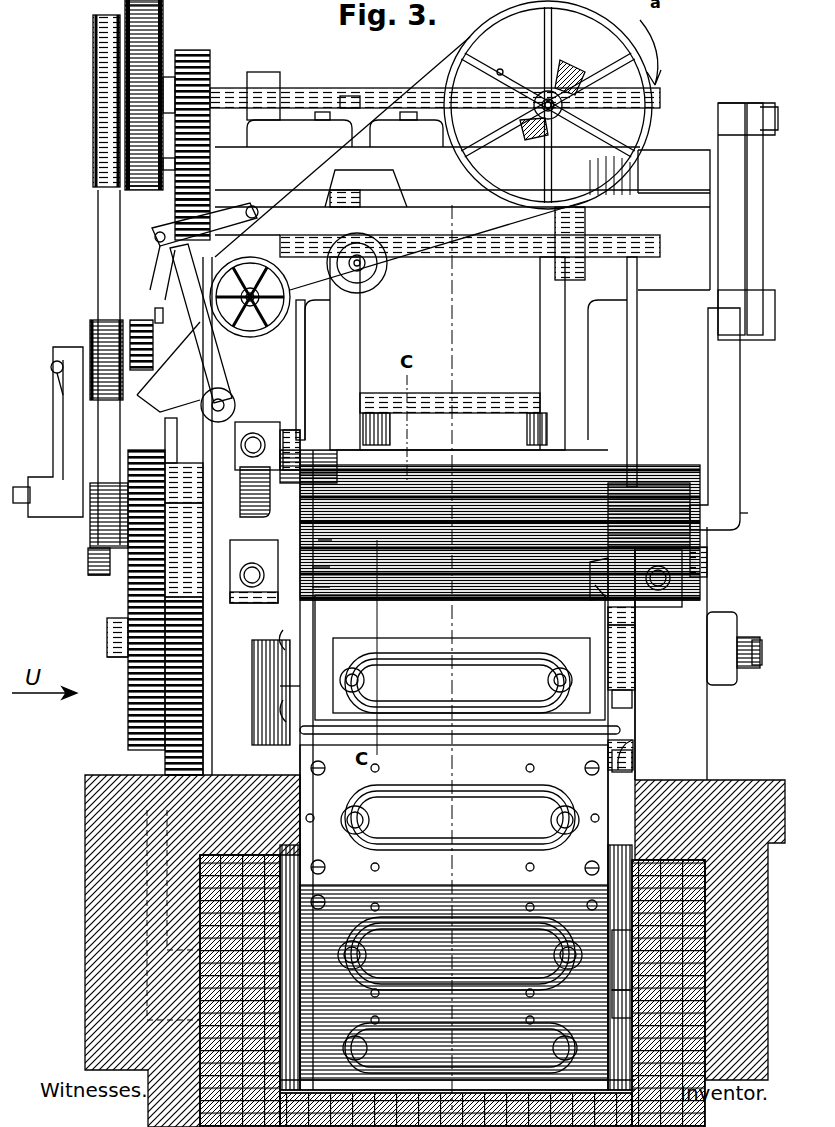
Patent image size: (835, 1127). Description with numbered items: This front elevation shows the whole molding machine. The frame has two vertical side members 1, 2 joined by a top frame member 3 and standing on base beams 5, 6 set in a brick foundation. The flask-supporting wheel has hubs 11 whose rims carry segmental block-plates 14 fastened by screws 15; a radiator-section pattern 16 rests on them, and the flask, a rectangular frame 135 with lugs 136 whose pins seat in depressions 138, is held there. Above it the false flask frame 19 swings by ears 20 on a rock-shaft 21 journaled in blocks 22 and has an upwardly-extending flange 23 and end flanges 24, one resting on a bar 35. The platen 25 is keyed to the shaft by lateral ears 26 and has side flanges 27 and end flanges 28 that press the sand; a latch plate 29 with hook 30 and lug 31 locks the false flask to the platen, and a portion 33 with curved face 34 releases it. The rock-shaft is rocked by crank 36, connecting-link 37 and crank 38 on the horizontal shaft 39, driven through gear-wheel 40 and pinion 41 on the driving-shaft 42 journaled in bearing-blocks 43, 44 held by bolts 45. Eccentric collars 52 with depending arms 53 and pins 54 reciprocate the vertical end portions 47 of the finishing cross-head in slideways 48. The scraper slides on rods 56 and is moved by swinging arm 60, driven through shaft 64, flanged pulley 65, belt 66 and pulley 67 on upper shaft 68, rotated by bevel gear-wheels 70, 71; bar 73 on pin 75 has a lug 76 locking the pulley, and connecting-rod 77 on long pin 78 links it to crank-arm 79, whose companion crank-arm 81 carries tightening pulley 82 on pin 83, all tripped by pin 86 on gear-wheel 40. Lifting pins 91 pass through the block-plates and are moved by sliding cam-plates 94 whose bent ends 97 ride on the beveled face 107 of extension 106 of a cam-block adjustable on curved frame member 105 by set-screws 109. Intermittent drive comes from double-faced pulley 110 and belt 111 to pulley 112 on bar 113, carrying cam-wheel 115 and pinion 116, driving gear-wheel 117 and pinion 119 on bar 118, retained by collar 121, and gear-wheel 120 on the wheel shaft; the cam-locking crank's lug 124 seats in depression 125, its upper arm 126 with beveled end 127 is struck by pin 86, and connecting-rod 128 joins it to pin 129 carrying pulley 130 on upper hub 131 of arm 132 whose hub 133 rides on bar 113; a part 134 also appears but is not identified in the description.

The vertical side member 1 is at (217, 645).
The vertical side member 2 is at (654, 663).
The top frame member 3 is at (648, 165).
The horizontal beam 5 is at (262, 775).
The horizontal beam 6 is at (632, 760).
The hub 11 is at (296, 806).
The segmental block-plate 14 is at (345, 897).
The screw 15 is at (323, 770).
The pattern 16 is at (470, 930).
The false flask frame 19 is at (614, 593).
The projecting ear 20 is at (343, 484).
The rock-shaft 21 is at (742, 513).
The bearing-block 22 is at (265, 604).
The upwardly-extending flange 23 is at (312, 568).
The outwardly-extending end flange 24 is at (312, 587).
The platen 25 is at (480, 452).
The lateral ear 26 is at (240, 560).
The side flange 27 is at (470, 497).
The end flange 28 is at (525, 472).
The latch plate 29 is at (258, 468).
The hook 30 is at (310, 455).
The lateral lug 31 is at (255, 492).
The releasing portion 33 is at (240, 478).
The curved face 34 is at (318, 542).
The supporting bar 35 is at (597, 583).
The crank 36 is at (715, 419).
The connecting-link 37 is at (755, 235).
The crank 38 is at (730, 180).
The horizontal shaft 39 is at (512, 255).
The gear-wheel 40 is at (178, 208).
The pinion 41 is at (205, 58).
The driving-shaft 42 is at (345, 100).
The bearing-block 43 is at (278, 100).
The bearing-block 44 is at (457, 80).
The bolt 45 is at (312, 98).
The vertical end portion 47 is at (460, 370).
The slideway 48 is at (301, 392).
The collar 52 is at (340, 212).
The depending arm 53 is at (458, 353).
The pin 54 is at (392, 437).
The horizontal rod 56 is at (492, 393).
The swinging arm 60 is at (366, 196).
The transverse shaft 64 is at (169, 350).
The flanged pulley 65 is at (263, 303).
The belt 66 is at (362, 145).
The pulley 67 is at (643, 117).
The upper transverse shaft 68 is at (578, 80).
The bevel gear-wheel 70 is at (548, 130).
The bevel gear-wheel 71 is at (500, 70).
The bar 73 is at (201, 323).
The pin 75 is at (230, 399).
The lug 76 is at (160, 380).
The connecting-rod 77 is at (205, 224).
The long pin 78 is at (162, 245).
The crank-arm 79 is at (270, 240).
The crank-arm 81 is at (372, 290).
The small flanged pulley 82 is at (383, 272).
The pin 83 is at (368, 263).
The pin 86 is at (210, 168).
The lifting pin 91 is at (380, 768).
The sliding cam-plate 94 is at (280, 637).
The bent end 97 is at (633, 695).
The curved frame member 105 is at (720, 628).
The extension 106 is at (280, 708).
The beveled face 107 is at (280, 686).
The set-screw 109 is at (762, 650).
The double-faced pulley 110 is at (165, 32).
The belt 111 is at (110, 208).
The pulley 112 is at (98, 552).
The shaft or bar 113 is at (22, 505).
The cam-wheel 115 is at (177, 462).
The pinion 116 is at (106, 578).
The gear-wheel 117 is at (135, 710).
The lower shaft or bar 118 is at (108, 640).
The pinion 119 is at (185, 600).
The gear-wheel 120 is at (175, 768).
The collar 121 is at (113, 658).
The lug 124 is at (259, 433).
The depression 125 is at (168, 420).
The upper arm 126 is at (180, 275).
The beveled end 127 is at (157, 312).
The connecting-rod 128 is at (135, 322).
The pin 129 is at (51, 365).
The pulley 130 is at (92, 335).
The upper hub 131 is at (68, 372).
The arm 132 is at (70, 433).
The hub 133 is at (90, 515).
The pulley 134 is at (137, 62).
The flask frame 135 is at (460, 721).
The lug 136 is at (624, 658).
The socket 138 is at (311, 822).